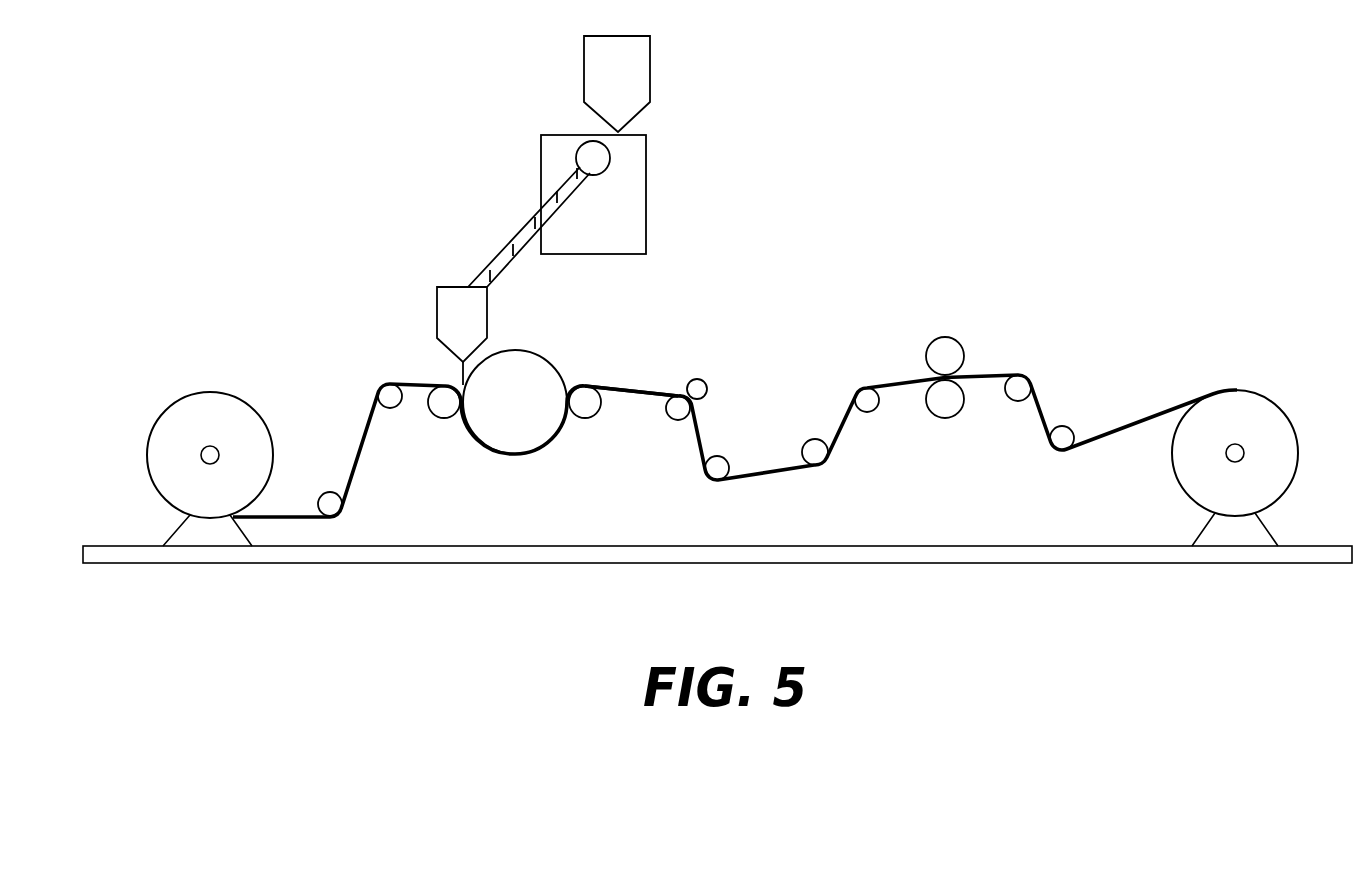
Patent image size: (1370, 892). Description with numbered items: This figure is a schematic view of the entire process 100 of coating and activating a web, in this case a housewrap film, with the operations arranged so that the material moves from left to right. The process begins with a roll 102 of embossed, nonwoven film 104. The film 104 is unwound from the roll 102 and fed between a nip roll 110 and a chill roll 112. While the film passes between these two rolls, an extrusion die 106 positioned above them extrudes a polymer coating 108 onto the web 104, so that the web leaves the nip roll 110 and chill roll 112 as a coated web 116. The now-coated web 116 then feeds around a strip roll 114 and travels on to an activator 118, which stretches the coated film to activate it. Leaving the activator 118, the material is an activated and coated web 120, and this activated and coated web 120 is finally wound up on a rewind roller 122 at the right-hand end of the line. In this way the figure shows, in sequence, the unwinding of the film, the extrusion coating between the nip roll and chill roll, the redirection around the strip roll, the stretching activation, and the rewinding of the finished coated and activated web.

The process 100 is at (925, 130).
The roll 102 is at (190, 417).
The film 104 is at (290, 520).
The extrusion die 106 is at (447, 315).
The polymer coating 108 is at (463, 371).
The nip roll 110 is at (428, 410).
The chill roll 112 is at (505, 437).
The strip roll 114 is at (602, 403).
The coated web 116 is at (625, 386).
The activator 118 is at (932, 349).
The activated and coated web 120 is at (1002, 373).
The rewind roller 122 is at (1280, 408).